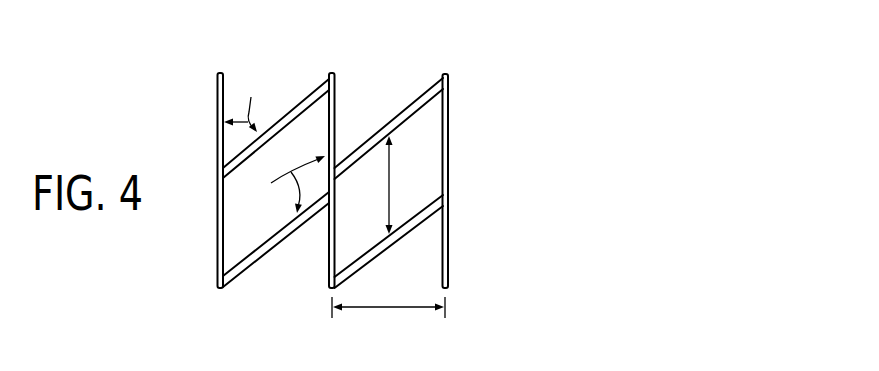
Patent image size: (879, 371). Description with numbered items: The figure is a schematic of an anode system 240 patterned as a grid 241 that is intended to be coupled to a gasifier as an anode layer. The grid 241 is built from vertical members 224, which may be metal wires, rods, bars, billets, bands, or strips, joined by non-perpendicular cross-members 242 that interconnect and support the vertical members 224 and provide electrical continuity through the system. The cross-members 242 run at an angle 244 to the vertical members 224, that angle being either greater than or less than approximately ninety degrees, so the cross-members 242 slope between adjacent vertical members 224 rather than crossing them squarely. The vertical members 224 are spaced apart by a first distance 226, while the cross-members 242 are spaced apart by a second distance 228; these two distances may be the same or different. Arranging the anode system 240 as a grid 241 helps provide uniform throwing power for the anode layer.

The anode system 240 is at (383, 189).
The grid 241 is at (455, 68).
The vertical members 224 is at (450, 140).
The second distance 228 is at (391, 187).
The first distance 226 is at (388, 308).
The non-perpendicular cross-members 242 is at (393, 248).
The angle 244 is at (274, 143).